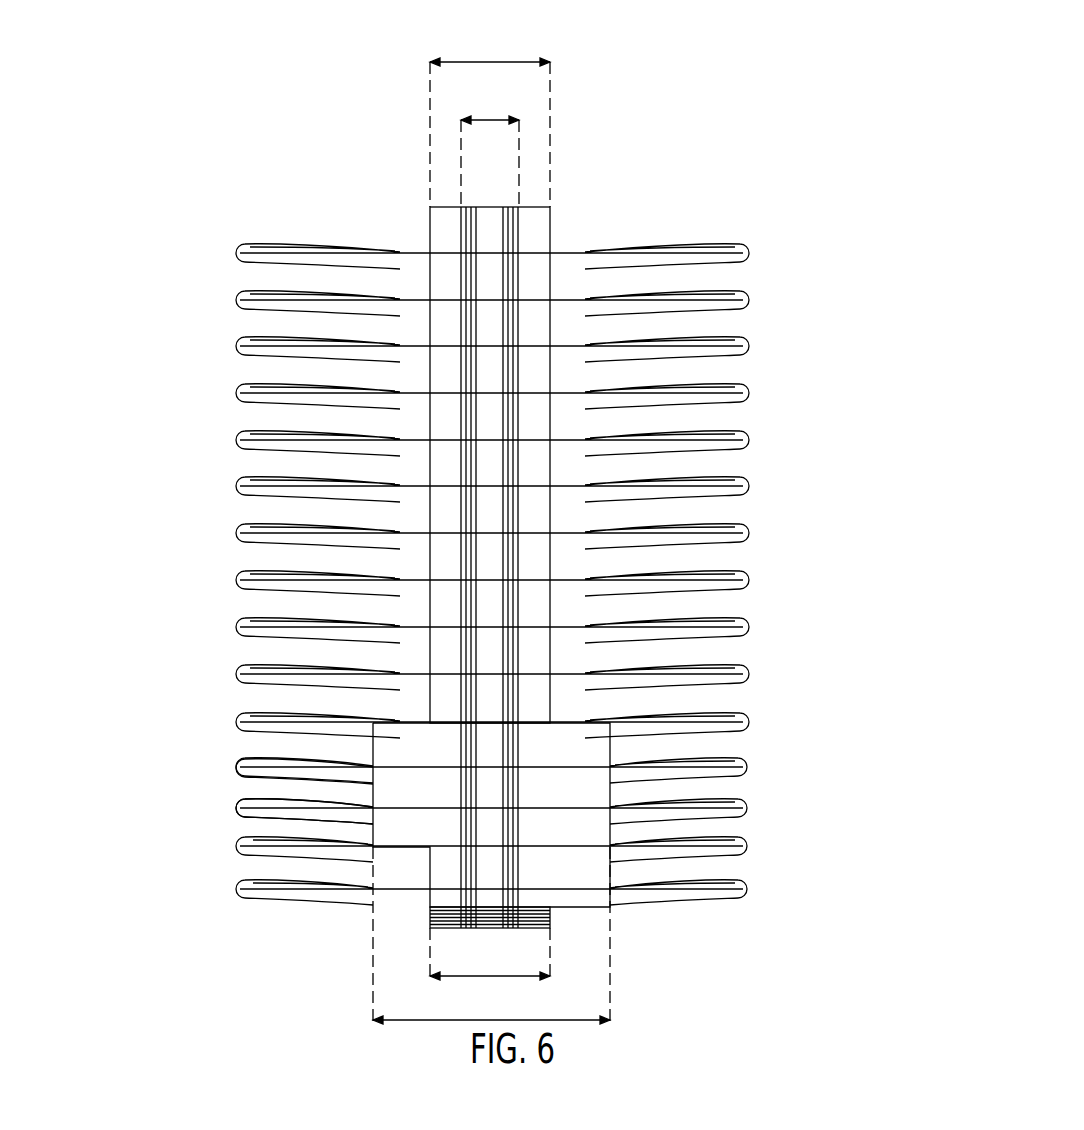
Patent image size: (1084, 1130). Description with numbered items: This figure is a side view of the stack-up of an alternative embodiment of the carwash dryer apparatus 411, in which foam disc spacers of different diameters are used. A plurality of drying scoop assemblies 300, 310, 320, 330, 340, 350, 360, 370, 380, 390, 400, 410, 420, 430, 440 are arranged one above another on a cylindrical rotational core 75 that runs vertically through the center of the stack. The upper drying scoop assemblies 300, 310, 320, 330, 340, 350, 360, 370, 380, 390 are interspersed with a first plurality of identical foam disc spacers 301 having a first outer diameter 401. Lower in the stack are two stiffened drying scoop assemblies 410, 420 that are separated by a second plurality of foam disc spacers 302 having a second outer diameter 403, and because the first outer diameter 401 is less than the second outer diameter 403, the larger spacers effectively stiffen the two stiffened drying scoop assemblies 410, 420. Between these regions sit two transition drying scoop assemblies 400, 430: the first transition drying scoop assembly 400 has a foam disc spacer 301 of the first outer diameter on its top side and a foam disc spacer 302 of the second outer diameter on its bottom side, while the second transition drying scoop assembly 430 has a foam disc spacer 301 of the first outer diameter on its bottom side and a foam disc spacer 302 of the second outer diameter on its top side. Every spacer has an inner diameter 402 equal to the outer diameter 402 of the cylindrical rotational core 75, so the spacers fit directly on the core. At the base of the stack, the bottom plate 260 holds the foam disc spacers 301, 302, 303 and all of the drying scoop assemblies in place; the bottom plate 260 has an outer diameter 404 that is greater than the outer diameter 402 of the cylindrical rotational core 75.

The cylindrical rotational core 75 is at (508, 232).
The bottom plate 260 is at (551, 927).
The drying scoop assembly 300 is at (240, 252).
The foam disc spacer 301 is at (428, 503).
The foam disc spacer 302 is at (240, 767).
The foam disc spacer 303 is at (430, 874).
The drying scoop assembly 310 is at (240, 300).
The drying scoop assembly 320 is at (240, 346).
The drying scoop assembly 330 is at (240, 393).
The drying scoop assembly 340 is at (240, 440).
The drying scoop assembly 350 is at (240, 486).
The drying scoop assembly 360 is at (240, 533).
The drying scoop assembly 370 is at (742, 582).
The drying scoop assembly 380 is at (240, 627).
The drying scoop assembly 390 is at (742, 674).
The first transition drying scoop assembly 400 is at (742, 722).
The first outer diameter 401 is at (545, 62).
The inner diameter 402 is at (455, 118).
The second outer diameter 403 is at (612, 1021).
The outer diameter 404 is at (430, 976).
The stiffened drying scoop assembly 410 is at (742, 767).
The carwash dryer apparatus 411 is at (757, 223).
The stiffened drying scoop assembly 420 is at (240, 808).
The second transition drying scoop assembly 430 is at (742, 846).
The drying scoop assembly 440 is at (240, 889).